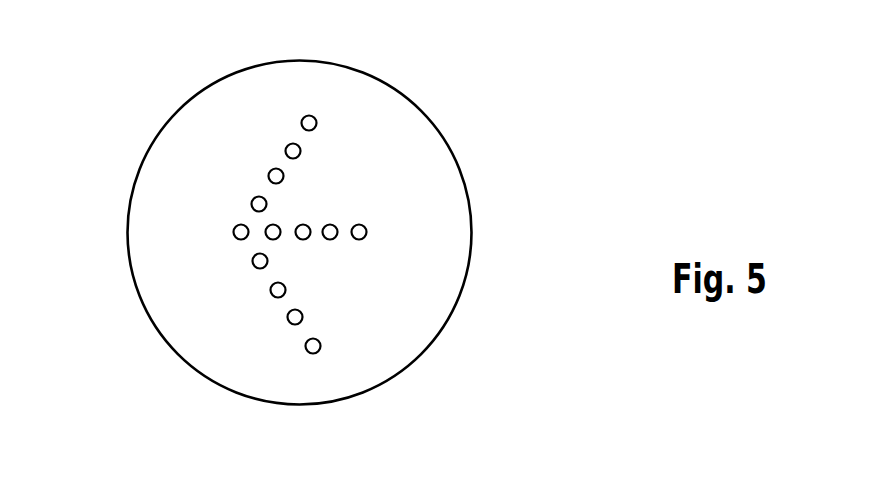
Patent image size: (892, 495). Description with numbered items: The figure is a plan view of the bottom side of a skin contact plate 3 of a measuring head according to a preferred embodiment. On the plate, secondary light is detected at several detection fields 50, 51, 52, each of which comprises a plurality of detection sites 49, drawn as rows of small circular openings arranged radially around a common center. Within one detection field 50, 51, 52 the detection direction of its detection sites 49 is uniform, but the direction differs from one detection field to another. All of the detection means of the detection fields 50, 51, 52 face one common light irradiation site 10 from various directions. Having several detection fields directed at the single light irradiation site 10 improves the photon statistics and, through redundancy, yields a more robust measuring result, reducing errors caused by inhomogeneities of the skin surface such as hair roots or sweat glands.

The skin contact plate 3 is at (407, 115).
The light irradiation site 10 is at (228, 227).
The detection sites 49 is at (310, 163).
The detection field 50 is at (264, 169).
The detection field 51 is at (343, 220).
The detection field 52 is at (278, 315).